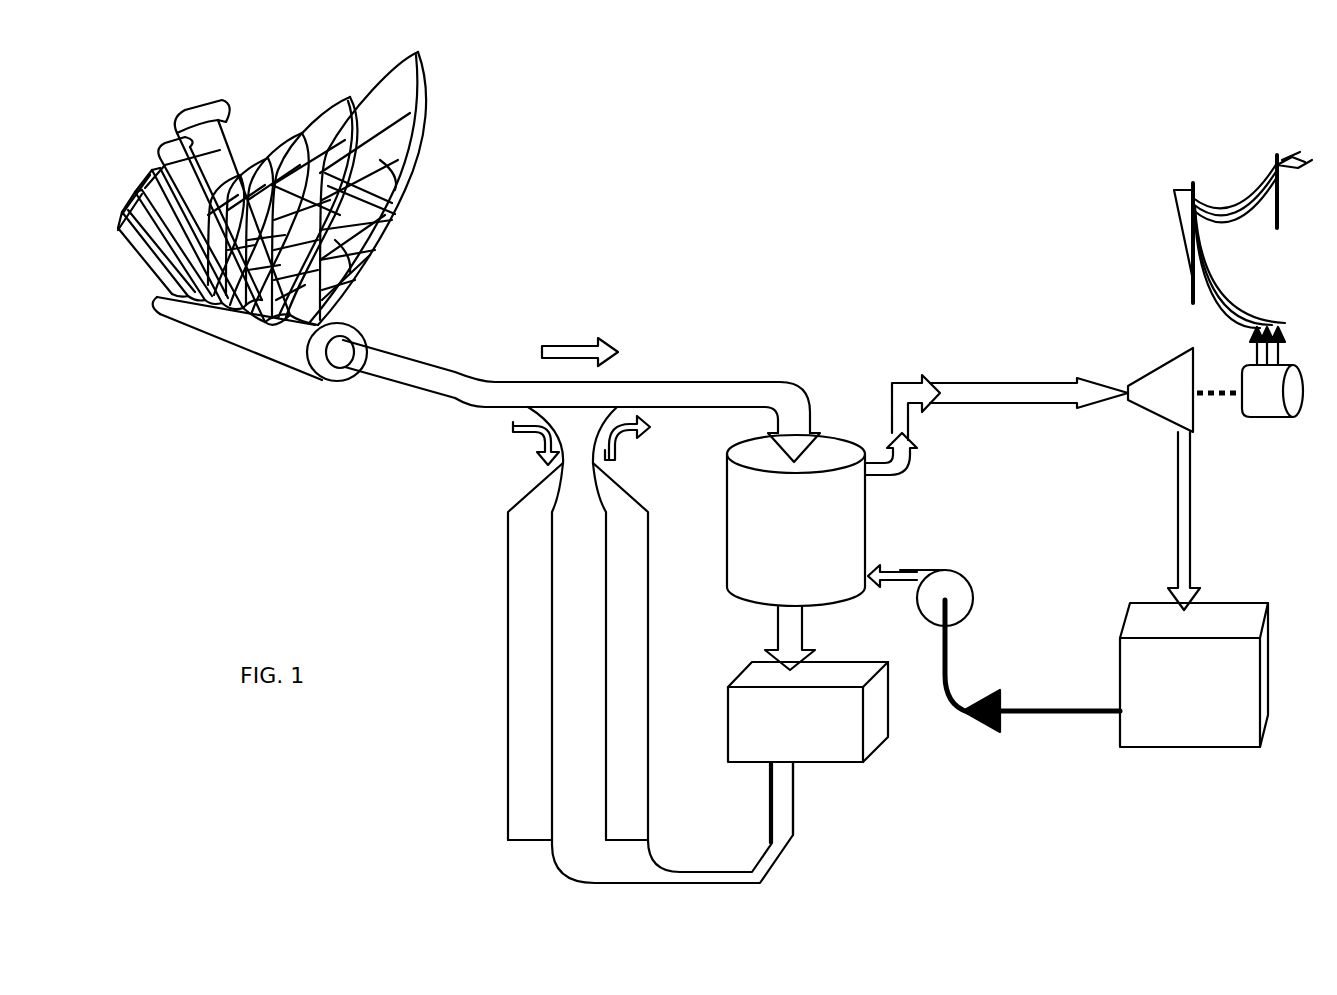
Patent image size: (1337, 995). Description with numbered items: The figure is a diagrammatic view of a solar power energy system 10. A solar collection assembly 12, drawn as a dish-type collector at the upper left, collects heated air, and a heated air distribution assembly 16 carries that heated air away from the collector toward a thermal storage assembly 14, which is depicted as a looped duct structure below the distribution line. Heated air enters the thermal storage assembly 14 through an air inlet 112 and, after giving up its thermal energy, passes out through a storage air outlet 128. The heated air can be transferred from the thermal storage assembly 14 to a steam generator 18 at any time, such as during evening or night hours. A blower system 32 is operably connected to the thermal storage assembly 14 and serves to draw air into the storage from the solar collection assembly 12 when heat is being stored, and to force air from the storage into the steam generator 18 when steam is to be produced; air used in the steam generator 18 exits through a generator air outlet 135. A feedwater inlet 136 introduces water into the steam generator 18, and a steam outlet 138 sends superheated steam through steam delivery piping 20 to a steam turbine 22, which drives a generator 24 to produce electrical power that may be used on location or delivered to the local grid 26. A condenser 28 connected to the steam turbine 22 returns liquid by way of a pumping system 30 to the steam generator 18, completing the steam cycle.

The solar power energy system 10 is at (988, 114).
The solar collection assembly 12 is at (440, 232).
The thermal storage assembly 14 is at (508, 661).
The heated air distribution assembly 16 is at (428, 386).
The steam generator 18 is at (796, 520).
The steam delivery piping 20 is at (959, 382).
The steam turbine 22 is at (1165, 372).
The generator 24 is at (1268, 408).
The local grid 26 is at (1234, 215).
The condenser 28 is at (1194, 675).
The pumping system 30 is at (958, 587).
The blower system 32 is at (885, 742).
The air inlet 112 is at (562, 460).
The storage air outlet 128 is at (552, 843).
The generator air outlet 135 is at (805, 607).
The feedwater inlet 136 is at (876, 572).
The steam outlet 138 is at (876, 456).